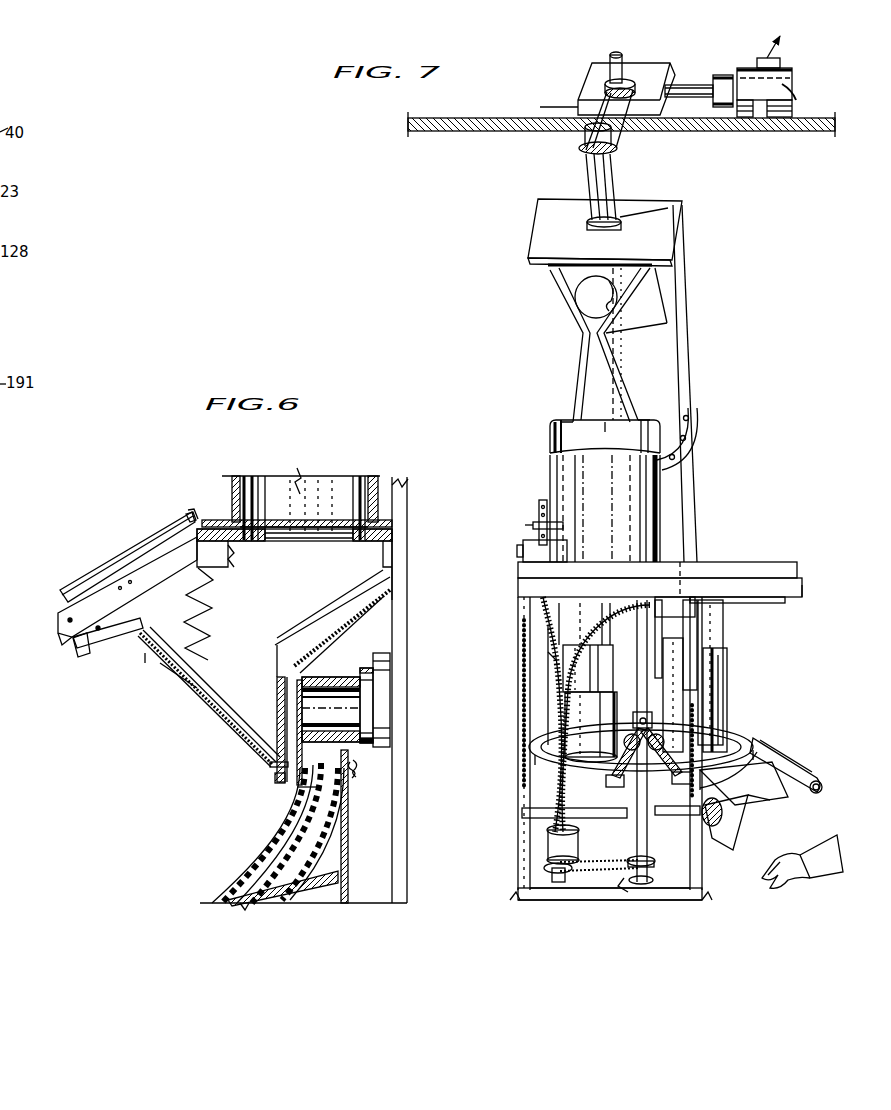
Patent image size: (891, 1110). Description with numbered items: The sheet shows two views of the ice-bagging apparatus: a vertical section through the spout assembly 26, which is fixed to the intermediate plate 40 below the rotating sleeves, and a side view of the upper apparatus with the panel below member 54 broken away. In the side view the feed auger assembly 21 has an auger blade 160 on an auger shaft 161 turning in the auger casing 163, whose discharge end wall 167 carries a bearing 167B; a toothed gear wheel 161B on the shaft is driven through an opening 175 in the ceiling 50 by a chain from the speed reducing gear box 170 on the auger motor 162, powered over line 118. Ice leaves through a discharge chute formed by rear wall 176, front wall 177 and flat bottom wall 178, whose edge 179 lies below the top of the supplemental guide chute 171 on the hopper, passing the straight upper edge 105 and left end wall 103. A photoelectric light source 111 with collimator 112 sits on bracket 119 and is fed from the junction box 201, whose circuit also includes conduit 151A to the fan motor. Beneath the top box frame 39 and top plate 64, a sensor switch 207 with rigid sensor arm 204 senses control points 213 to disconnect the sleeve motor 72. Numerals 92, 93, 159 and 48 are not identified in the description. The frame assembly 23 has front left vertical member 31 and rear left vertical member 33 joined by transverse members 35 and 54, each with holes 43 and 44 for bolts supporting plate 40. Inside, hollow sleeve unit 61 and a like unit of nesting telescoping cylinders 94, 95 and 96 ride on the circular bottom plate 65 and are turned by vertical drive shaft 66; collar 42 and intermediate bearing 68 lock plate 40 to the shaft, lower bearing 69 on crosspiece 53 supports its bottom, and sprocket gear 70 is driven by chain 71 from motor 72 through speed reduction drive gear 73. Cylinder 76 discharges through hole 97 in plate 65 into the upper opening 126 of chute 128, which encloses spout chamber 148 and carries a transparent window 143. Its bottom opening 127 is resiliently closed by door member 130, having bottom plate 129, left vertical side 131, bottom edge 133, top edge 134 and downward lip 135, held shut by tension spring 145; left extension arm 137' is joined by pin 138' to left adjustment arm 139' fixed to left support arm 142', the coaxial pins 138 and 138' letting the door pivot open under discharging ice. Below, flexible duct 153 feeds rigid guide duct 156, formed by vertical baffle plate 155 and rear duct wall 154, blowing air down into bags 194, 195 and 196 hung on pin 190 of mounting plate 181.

In FIG. 7, the ceiling 50 is at (775, 130).
In FIG. 7, the speed reducing gear box 170 is at (585, 84).
In FIG. 7, the mounting bracket 159 is at (578, 107).
In FIG. 7, the auger motor 162 is at (752, 78).
In FIG. 7, the conduit line 118 is at (768, 58).
In FIG. 7, the ceiling opening 175 is at (632, 128).
In FIG. 7, the toothed gear wheel 161B is at (578, 150).
In FIG. 7, the auger shaft 161 is at (598, 190).
In FIG. 7, the discharge end wall 167 is at (657, 228).
In FIG. 7, the discharge end bearing 167B is at (620, 217).
In FIG. 7, the rear wall 176 is at (568, 340).
In FIG. 7, the front wall 177 is at (645, 339).
In FIG. 7, the flat bottom wall 178 is at (578, 403).
In FIG. 7, the auger blade 160 is at (594, 298).
In FIG. 7, the feed auger assembly 21 is at (686, 366).
In FIG. 7, the auger casing 163 is at (686, 305).
In FIG. 7, the supplemental guide chute 171 is at (660, 426).
In FIG. 7, the upper hopper edge 105 is at (550, 437).
In FIG. 7, the bottom wall edge 179 is at (605, 425).
In FIG. 7, the left end wall 103 is at (605, 508).
In FIG. 7, the bracket 119 is at (540, 515).
In FIG. 7, the collimator 112 is at (553, 522).
In FIG. 7, the photoelectric light source 111 is at (532, 525).
In FIG. 7, the junction box 201 is at (523, 553).
In FIG. 7, the upper platform plate 93 is at (518, 576).
In FIG. 7, the lower platform plate 92 is at (766, 566).
In FIG. 7, the top box frame 39 is at (800, 590).
In FIG. 7, the top plate 64 is at (745, 603).
In FIG. 7, the sensor arm 204 is at (685, 598).
In FIG. 7, the sensor switch 207 is at (688, 606).
In FIG. 7, the frame assembly 23 is at (518, 693).
In FIG. 7, the rear left vertical member 33 is at (518, 617).
In FIG. 7, the holes 43 is at (520, 764).
In FIG. 7, the control points 213 is at (543, 612).
In FIG. 7, the motor conduit 151A is at (550, 655).
In FIG. 7, the telescoping cylinder 94 is at (583, 624).
In FIG. 7, the telescoping cylinder 95 is at (588, 668).
In FIG. 7, the drive shaft 66 is at (632, 700).
In FIG. 7, the collar 42 is at (636, 720).
In FIG. 7, the front left vertical member 31 is at (694, 657).
In FIG. 7, the hollow sleeve unit 61 is at (733, 678).
In FIG. 7, the holes 44 is at (692, 745).
In FIG. 7, the bottom plate 65 is at (735, 740).
In FIG. 6, the bottom plate 65 is at (206, 519).
In FIG. 7, the intermediate bearing 68 is at (636, 770).
In FIG. 7, the telescoping cylinder 96 is at (548, 728).
In FIG. 7, the horizontal transverse member 54 is at (522, 812).
In FIG. 7, the rotating sleeve assembly motor 72 is at (548, 847).
In FIG. 7, the speed reduction drive gear 73 is at (545, 870).
In FIG. 7, the chain 71 is at (607, 862).
In FIG. 7, the sprocket gear 70 is at (650, 859).
In FIG. 7, the lower bearing 69 is at (650, 881).
In FIG. 7, the crosspiece 53 is at (690, 881).
In FIG. 7, the horizontal transverse member 35 is at (707, 897).
In FIG. 7, the intermediate plate 40 is at (770, 752).
In FIG. 6, the intermediate plate 40 is at (186, 516).
In FIG. 7, the pivot pin 138 is at (838, 788).
In FIG. 7, the left vertical side 131 is at (770, 795).
In FIG. 6, the left vertical side 131 is at (197, 688).
In FIG. 7, the spout assembly 26 is at (766, 822).
In FIG. 7, the operator hand 48 is at (796, 880).
In FIG. 6, the chute 128 is at (348, 633).
In FIG. 6, the telescoping cylinder 76 is at (292, 493).
In FIG. 6, the bottom plate hole 97 is at (320, 510).
In FIG. 6, the upper chute opening 126 is at (293, 528).
In FIG. 6, the spout chamber 148 is at (294, 607).
In FIG. 6, the tension spring 145 is at (205, 612).
In FIG. 6, the bottom opening 127 is at (180, 672).
In FIG. 6, the bottom plate 129 is at (213, 707).
In FIG. 6, the door member 130 is at (194, 790).
In FIG. 6, the bottom edge 133 is at (270, 763).
In FIG. 6, the lip 135 is at (274, 774).
In FIG. 6, the vertical baffle plate 155 is at (279, 700).
In FIG. 6, the rear duct wall 154 is at (298, 785).
In FIG. 6, the flexible duct 153 is at (331, 709).
In FIG. 6, the guide duct 156 is at (340, 680).
In FIG. 6, the mounting plate 181 is at (348, 845).
In FIG. 6, the pin 190 is at (357, 772).
In FIG. 6, the bag 194 is at (280, 842).
In FIG. 6, the bag 195 is at (260, 863).
In FIG. 6, the bag 196 is at (303, 873).
In FIG. 6, the transparent window 143 is at (148, 535).
In FIG. 6, the left support arm 142' is at (119, 587).
In FIG. 6, the top edge 134 is at (140, 630).
In FIG. 6, the left adjustment arm 139' is at (38, 645).
In FIG. 6, the left pivot pin 138' is at (64, 668).
In FIG. 6, the left extension arm 137' is at (150, 671).